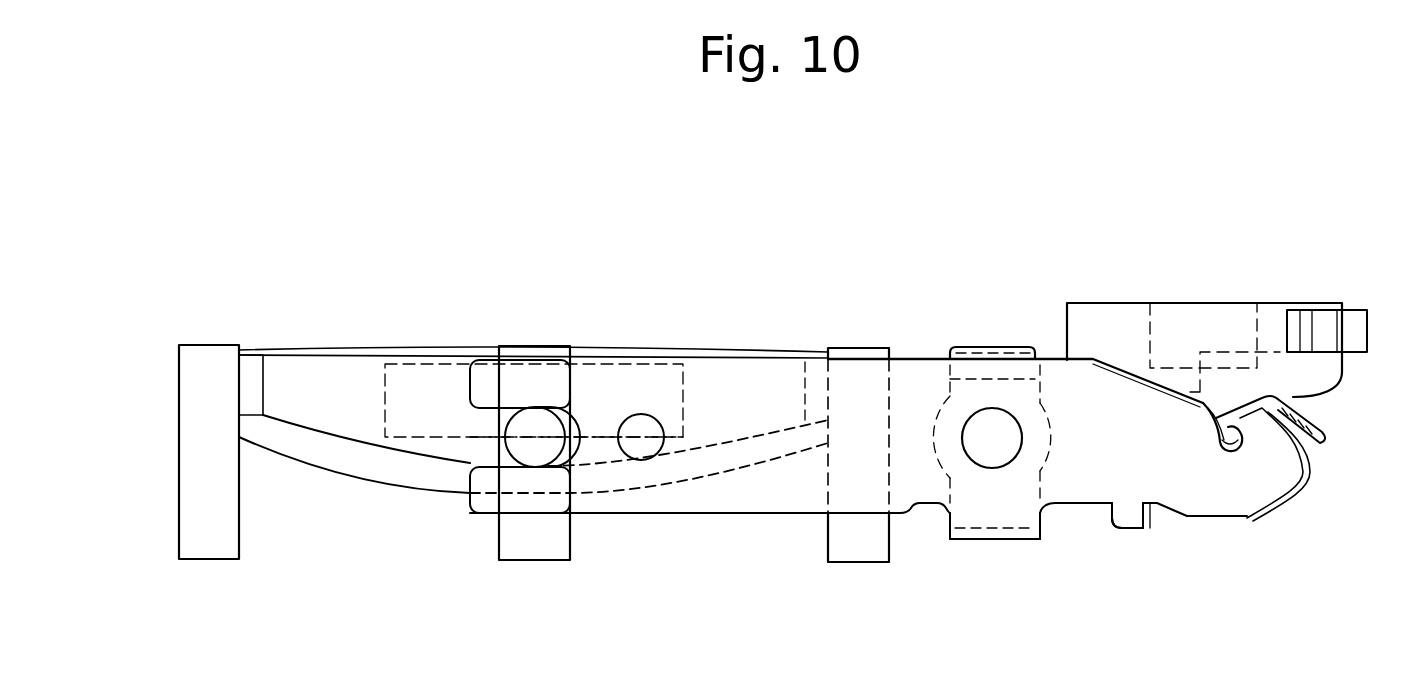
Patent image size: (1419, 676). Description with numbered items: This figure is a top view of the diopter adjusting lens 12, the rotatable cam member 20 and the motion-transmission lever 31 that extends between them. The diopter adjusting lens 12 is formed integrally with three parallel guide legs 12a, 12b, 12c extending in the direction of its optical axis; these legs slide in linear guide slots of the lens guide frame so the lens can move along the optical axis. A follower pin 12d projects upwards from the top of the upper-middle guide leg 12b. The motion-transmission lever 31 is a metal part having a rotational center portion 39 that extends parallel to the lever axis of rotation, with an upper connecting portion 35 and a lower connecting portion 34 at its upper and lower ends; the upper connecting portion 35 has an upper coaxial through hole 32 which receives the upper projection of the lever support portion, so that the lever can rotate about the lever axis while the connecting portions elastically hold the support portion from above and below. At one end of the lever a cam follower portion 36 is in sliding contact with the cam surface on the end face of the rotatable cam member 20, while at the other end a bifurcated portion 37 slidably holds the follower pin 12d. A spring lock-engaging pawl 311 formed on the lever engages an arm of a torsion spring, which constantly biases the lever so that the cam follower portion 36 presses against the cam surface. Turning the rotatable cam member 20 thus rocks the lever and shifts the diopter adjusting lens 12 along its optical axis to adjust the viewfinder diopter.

The diopter adjusting lens 12 is at (375, 472).
The guide leg 12a is at (195, 475).
The upper-middle guide leg 12b is at (539, 552).
The guide leg 12c is at (858, 548).
The follower pin 12d is at (537, 427).
The rotatable cam member 20 is at (1112, 318).
The motion-transmission lever 31 is at (915, 372).
The spring lock-engaging pawl 311 is at (1142, 537).
The upper coaxial through hole 32 is at (990, 420).
The lower connecting portion 34 is at (963, 353).
The upper connecting portion 35 is at (1020, 472).
The cam follower portion 36 is at (1322, 437).
The bifurcated portion 37 is at (470, 413).
The rotational center portion 39 is at (1003, 535).